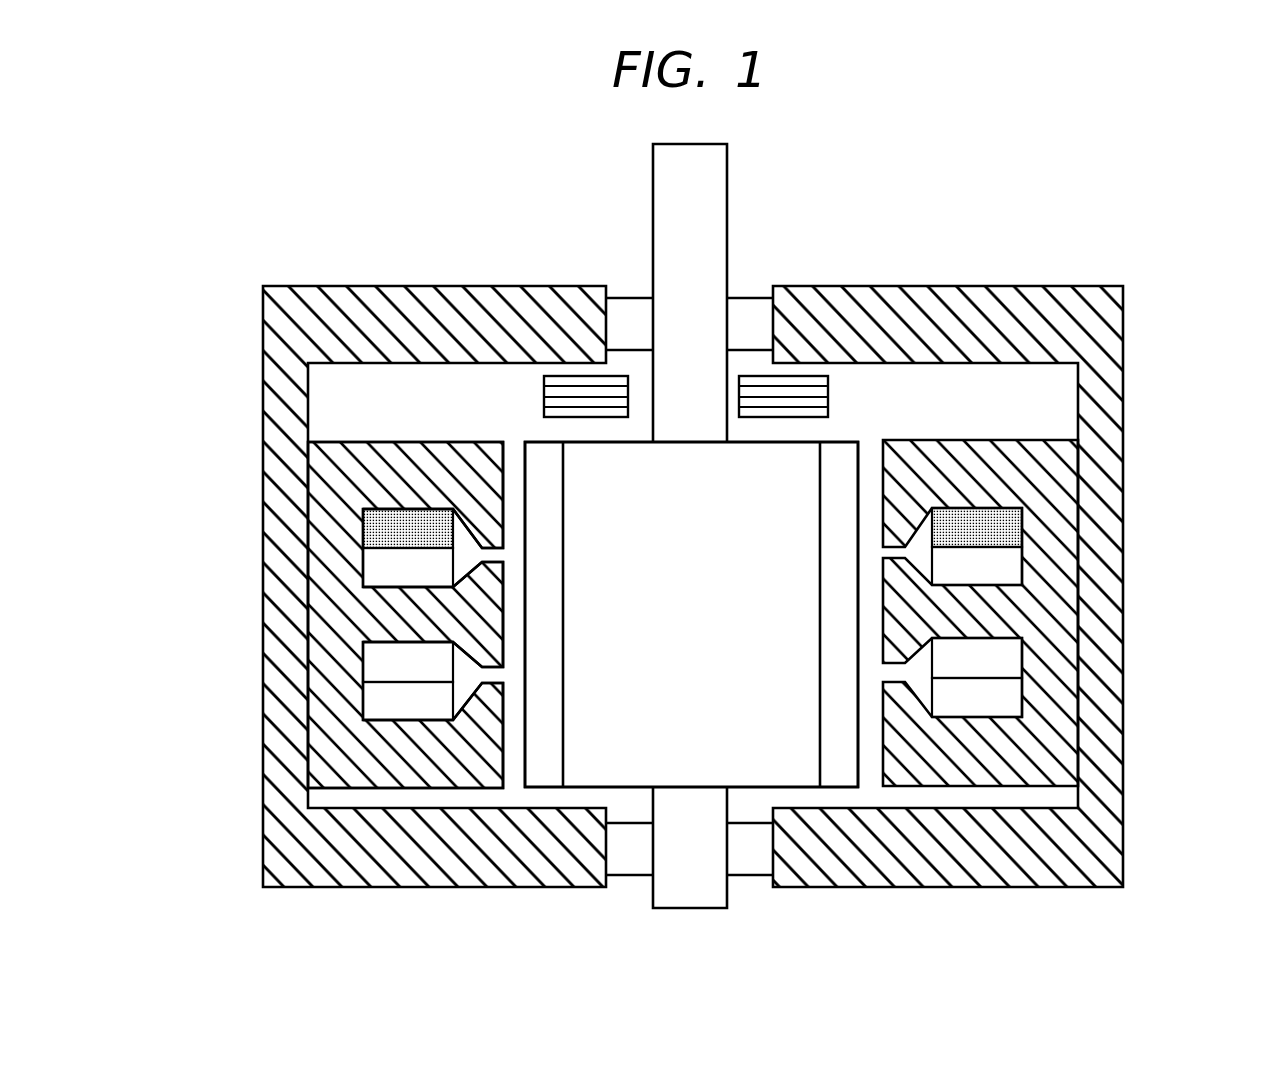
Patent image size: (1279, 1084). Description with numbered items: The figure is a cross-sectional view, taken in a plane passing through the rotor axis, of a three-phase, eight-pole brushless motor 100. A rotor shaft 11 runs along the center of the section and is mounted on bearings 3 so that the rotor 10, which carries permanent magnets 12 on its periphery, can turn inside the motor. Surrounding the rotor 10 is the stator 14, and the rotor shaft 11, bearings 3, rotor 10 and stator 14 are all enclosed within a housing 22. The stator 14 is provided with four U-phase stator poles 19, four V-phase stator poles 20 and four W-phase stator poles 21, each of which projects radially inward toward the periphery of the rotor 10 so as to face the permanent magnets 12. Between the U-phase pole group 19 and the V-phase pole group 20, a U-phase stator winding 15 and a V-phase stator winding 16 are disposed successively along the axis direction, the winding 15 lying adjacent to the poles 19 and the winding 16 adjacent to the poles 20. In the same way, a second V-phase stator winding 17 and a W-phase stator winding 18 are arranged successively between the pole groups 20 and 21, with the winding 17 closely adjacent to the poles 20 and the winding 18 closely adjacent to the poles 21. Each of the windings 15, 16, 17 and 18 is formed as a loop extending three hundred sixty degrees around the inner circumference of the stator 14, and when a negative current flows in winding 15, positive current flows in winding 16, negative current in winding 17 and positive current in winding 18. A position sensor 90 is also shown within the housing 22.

The brushless motor 100 is at (1113, 168).
The bearings 3 is at (626, 320).
The rotor 10 is at (751, 789).
The rotor shaft 11 is at (700, 229).
The permanent magnets 12 is at (837, 465).
The stator 14 is at (1060, 758).
The U-phase stator winding 15 is at (1007, 520).
The V-phase stator winding 16 is at (1007, 563).
The V-phase stator winding 17 is at (1007, 657).
The W-phase stator winding 18 is at (1007, 697).
The U-phase stator poles 19 is at (458, 470).
The V-phase stator poles 20 is at (458, 608).
The W-phase stator poles 21 is at (458, 746).
The housing 22 is at (1005, 300).
The position sensor 90 is at (570, 390).